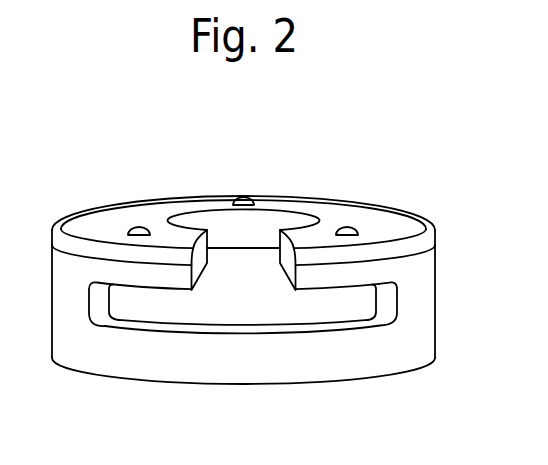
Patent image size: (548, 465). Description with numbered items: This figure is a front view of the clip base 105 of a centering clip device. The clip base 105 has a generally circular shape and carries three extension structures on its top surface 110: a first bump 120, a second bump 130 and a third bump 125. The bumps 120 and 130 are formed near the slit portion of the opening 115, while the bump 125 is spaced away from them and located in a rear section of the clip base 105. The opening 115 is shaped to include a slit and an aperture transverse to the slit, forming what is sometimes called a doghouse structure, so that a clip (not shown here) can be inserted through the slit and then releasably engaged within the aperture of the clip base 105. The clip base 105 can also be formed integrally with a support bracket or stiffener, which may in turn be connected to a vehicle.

The clip base 105 is at (243, 266).
The top surface 110 is at (299, 199).
The opening 115 is at (247, 310).
The first extension structure or bump 120 is at (348, 227).
The third bump 125 is at (244, 197).
The second bump 130 is at (139, 227).